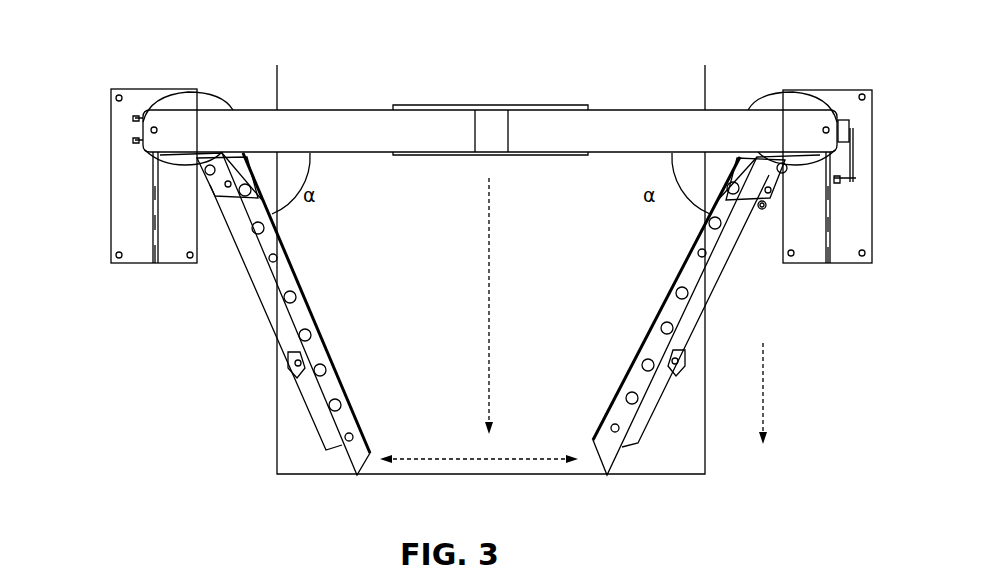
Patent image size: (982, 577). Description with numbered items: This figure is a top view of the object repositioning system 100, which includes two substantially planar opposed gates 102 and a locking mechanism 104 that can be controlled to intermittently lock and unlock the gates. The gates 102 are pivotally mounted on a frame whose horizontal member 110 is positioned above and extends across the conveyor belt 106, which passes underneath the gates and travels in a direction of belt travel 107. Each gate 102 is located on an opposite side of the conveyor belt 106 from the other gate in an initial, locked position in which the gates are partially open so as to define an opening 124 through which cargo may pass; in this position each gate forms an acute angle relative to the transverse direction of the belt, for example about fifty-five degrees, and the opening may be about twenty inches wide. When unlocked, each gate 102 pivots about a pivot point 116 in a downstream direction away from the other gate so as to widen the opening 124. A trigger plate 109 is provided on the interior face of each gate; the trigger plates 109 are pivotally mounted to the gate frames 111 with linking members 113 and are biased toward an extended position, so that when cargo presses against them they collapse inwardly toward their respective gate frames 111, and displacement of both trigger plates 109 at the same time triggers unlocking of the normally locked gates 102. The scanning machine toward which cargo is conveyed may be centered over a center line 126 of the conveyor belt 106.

The object repositioning system 100 is at (76, 76).
The gate 102 is at (492, 314).
The locking mechanism 104 is at (228, 82).
The conveyor belt 106 is at (396, 331).
The direction of belt travel 107 is at (768, 364).
The trigger plate 109 is at (312, 304).
The horizontal member 110 is at (376, 108).
The gate frame 111 is at (283, 330).
The linking member 113 is at (240, 160).
The pivot point 116 is at (186, 106).
The opening 124 is at (517, 460).
The center line 126 is at (492, 372).